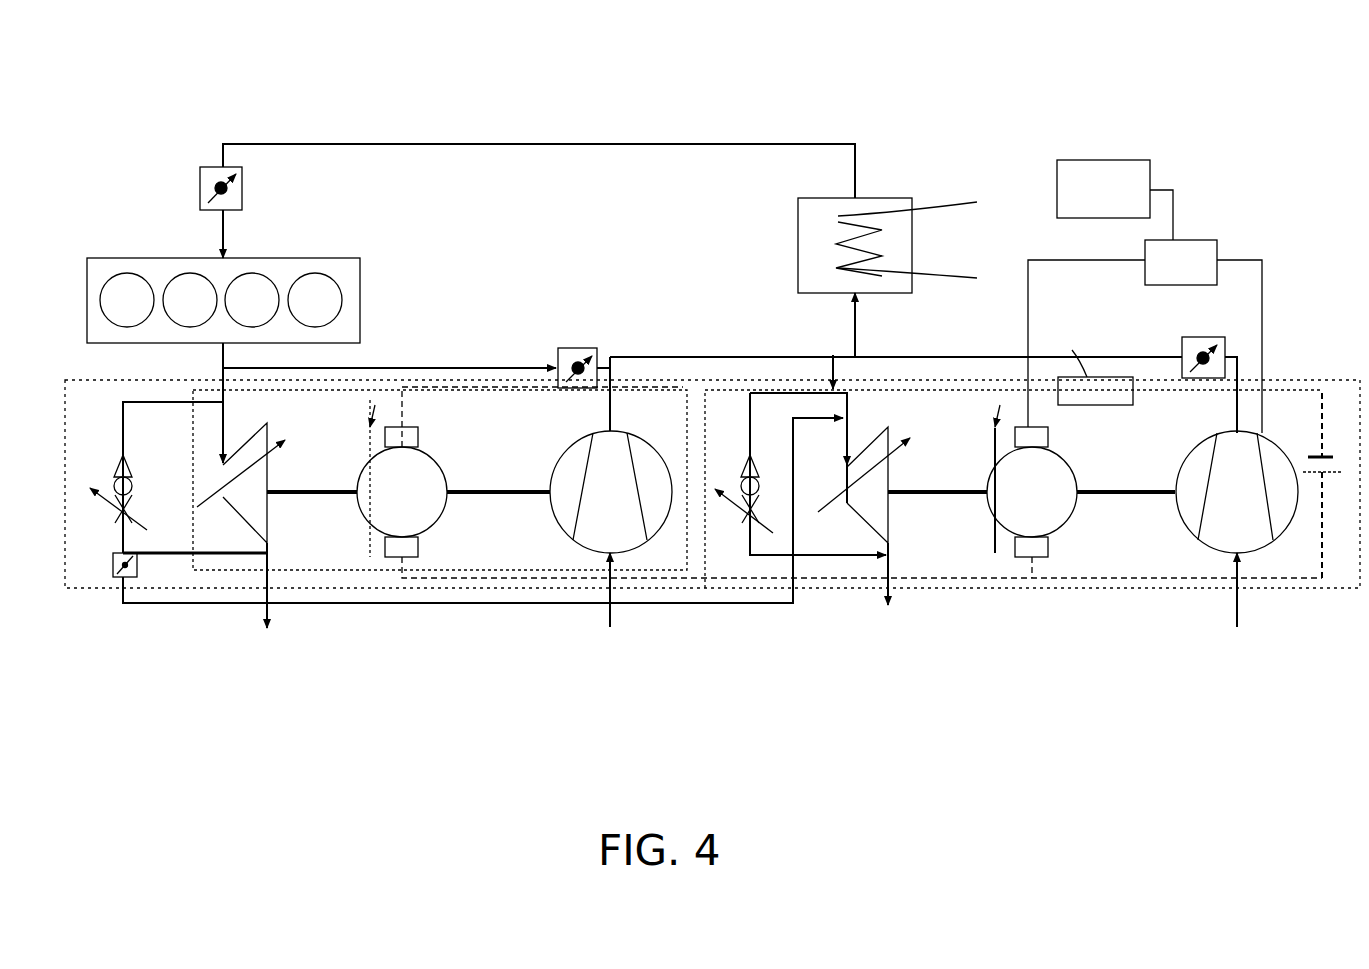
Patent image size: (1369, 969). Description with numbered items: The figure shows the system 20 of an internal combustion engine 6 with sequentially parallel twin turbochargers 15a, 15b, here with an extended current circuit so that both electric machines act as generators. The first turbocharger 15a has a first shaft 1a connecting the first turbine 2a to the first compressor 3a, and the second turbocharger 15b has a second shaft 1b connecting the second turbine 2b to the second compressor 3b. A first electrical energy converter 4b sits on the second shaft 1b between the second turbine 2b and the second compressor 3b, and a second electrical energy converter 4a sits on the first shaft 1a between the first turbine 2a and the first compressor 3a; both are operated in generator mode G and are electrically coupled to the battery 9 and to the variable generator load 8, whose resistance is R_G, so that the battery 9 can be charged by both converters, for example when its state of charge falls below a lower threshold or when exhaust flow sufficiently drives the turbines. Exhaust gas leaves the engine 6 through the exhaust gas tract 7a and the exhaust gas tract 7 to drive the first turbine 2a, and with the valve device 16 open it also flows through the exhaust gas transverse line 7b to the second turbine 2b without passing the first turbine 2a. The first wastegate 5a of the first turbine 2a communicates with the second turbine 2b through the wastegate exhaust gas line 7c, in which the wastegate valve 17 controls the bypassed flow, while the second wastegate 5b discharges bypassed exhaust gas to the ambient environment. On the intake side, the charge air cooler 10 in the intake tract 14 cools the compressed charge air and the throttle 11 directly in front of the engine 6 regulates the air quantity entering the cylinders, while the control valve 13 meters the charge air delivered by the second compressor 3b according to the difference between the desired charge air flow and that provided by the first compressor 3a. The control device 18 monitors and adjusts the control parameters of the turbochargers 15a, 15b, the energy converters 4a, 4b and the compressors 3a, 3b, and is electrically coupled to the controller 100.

The first shaft 1a is at (408, 477).
The second shaft 1b is at (1031, 478).
The first turbine 2a is at (241, 525).
The second turbine 2b is at (864, 516).
The first compressor 3a is at (611, 492).
The second compressor 3b is at (1237, 529).
The second electrical energy converter 4a is at (402, 478).
The first electrical energy converter 4b is at (1032, 479).
The first wastegate 5a is at (116, 492).
The second wastegate 5b is at (800, 474).
The internal combustion engine 6 is at (223, 300).
The exhaust gas tract 7 is at (808, 429).
The exhaust gas tract 7a is at (192, 448).
The exhaust gas transverse line 7b is at (465, 367).
The wastegate exhaust gas line 7c is at (405, 605).
The variable generator load 8 is at (1130, 420).
The battery 9 is at (1322, 485).
The charge air cooler 10 is at (887, 277).
The throttle 11 is at (238, 188).
The control valve 13 is at (1209, 372).
The intake tract 14 is at (745, 144).
The first turbocharger 15a is at (305, 557).
The second turbocharger 15b is at (992, 570).
The valve device 16 is at (578, 355).
The wastegate valve 17 is at (118, 578).
The control device 18 is at (1180, 260).
The system 20 is at (980, 177).
The controller 100 is at (1115, 200).